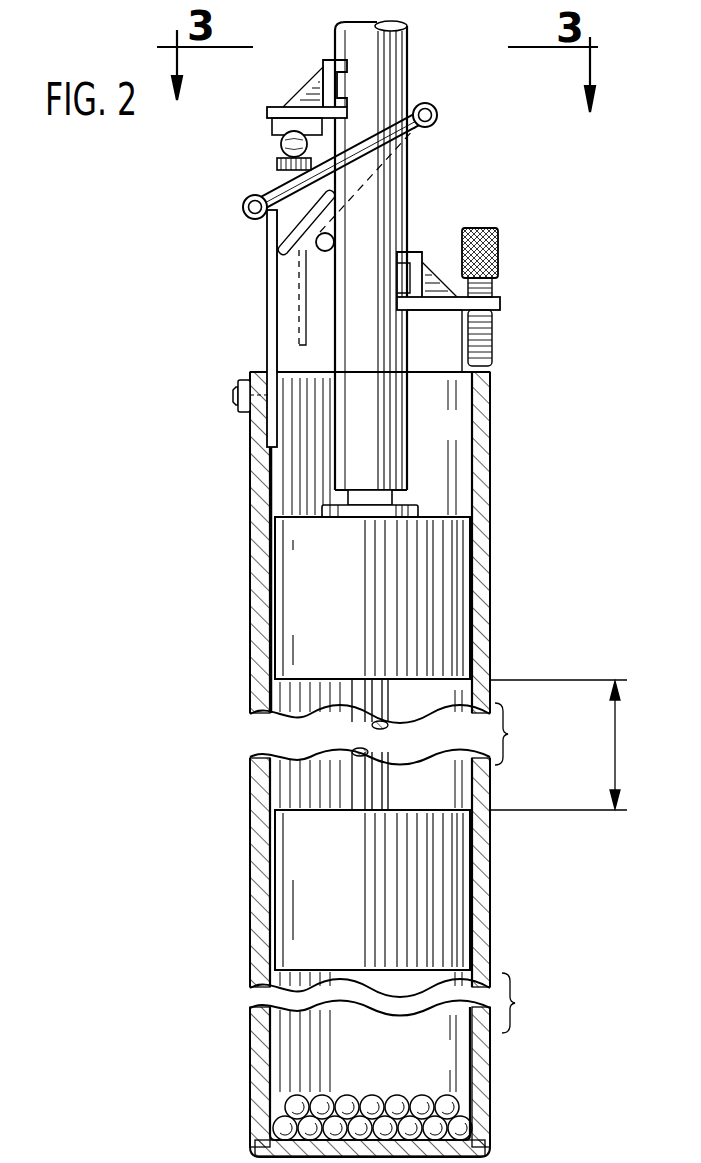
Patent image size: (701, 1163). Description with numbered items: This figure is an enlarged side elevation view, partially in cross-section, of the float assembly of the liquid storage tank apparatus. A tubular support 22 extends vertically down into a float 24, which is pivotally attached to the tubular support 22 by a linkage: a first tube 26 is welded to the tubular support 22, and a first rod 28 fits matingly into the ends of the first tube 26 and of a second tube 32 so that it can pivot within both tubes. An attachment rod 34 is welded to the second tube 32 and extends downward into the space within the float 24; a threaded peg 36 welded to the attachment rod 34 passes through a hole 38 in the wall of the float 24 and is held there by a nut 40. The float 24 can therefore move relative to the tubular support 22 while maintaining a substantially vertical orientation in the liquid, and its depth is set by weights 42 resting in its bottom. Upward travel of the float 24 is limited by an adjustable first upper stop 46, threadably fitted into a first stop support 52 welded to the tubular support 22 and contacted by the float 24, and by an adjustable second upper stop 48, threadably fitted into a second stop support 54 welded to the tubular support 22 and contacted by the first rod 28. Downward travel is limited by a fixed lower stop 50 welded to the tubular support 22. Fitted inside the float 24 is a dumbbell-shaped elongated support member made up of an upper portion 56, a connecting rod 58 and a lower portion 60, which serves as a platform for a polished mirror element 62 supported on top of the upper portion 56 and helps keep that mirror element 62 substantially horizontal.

The tubular support 22 is at (408, 440).
The float 24 is at (490, 908).
The first tube 26 is at (440, 117).
The first rod 28 is at (407, 158).
The second tube 32 is at (243, 205).
The attachment rod 34 is at (268, 270).
The threaded peg 36 is at (233, 396).
The hole 38 is at (243, 380).
The nut 40 is at (244, 410).
The weights 42 is at (322, 1098).
The first upper stop 46 is at (500, 262).
The second upper stop 48 is at (277, 163).
The lower stop 50 is at (324, 252).
The first stop support 52 is at (432, 313).
The second stop support 54 is at (315, 95).
The upper portion 56 is at (332, 594).
The connecting rod 58 is at (390, 781).
The lower portion 60 is at (325, 877).
The polished mirror element 62 is at (400, 505).